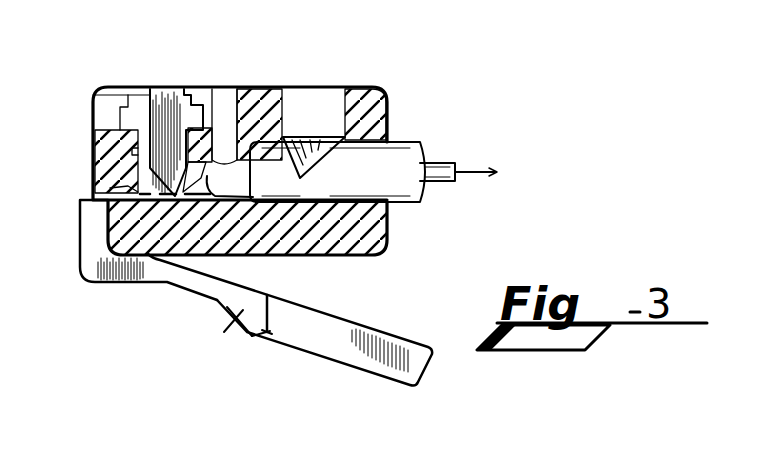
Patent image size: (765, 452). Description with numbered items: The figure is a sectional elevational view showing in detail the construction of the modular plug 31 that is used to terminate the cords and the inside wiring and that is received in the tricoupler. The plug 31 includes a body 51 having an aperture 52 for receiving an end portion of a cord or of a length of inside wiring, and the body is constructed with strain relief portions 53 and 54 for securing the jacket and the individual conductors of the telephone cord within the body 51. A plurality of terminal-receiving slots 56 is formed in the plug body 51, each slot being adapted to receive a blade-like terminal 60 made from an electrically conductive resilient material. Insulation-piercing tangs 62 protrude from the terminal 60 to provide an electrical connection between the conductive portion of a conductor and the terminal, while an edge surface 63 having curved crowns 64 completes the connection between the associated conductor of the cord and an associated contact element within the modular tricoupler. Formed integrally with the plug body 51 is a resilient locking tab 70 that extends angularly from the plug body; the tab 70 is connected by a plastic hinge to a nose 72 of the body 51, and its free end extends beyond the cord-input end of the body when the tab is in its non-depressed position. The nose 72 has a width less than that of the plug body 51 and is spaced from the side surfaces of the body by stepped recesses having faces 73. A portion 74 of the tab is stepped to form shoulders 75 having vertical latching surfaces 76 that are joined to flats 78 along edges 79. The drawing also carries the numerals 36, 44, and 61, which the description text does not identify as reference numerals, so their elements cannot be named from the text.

The modular plug 31 is at (394, 257).
The conductor 36 is at (415, 203).
The housing top wall 44 is at (270, 83).
The body 51 is at (365, 85).
The aperture 52 is at (388, 138).
The strain relief portion 53 is at (313, 139).
The strain relief portion 54 is at (220, 147).
The terminal-receiving slot 56 is at (112, 93).
The blade-like terminal 60 is at (170, 87).
The cavity 61 is at (130, 115).
The insulation-piercing tang 62 is at (110, 188).
The edge surface 63 is at (183, 97).
The curved crown 64 is at (135, 87).
The resilient locking tab 70 is at (405, 382).
The nose 72 is at (102, 287).
The face 73 is at (103, 243).
The portion 74 is at (335, 320).
The shoulder 75 is at (245, 310).
The vertical latching surface 76 is at (270, 312).
The flat 78 is at (250, 336).
The edge 79 is at (275, 338).